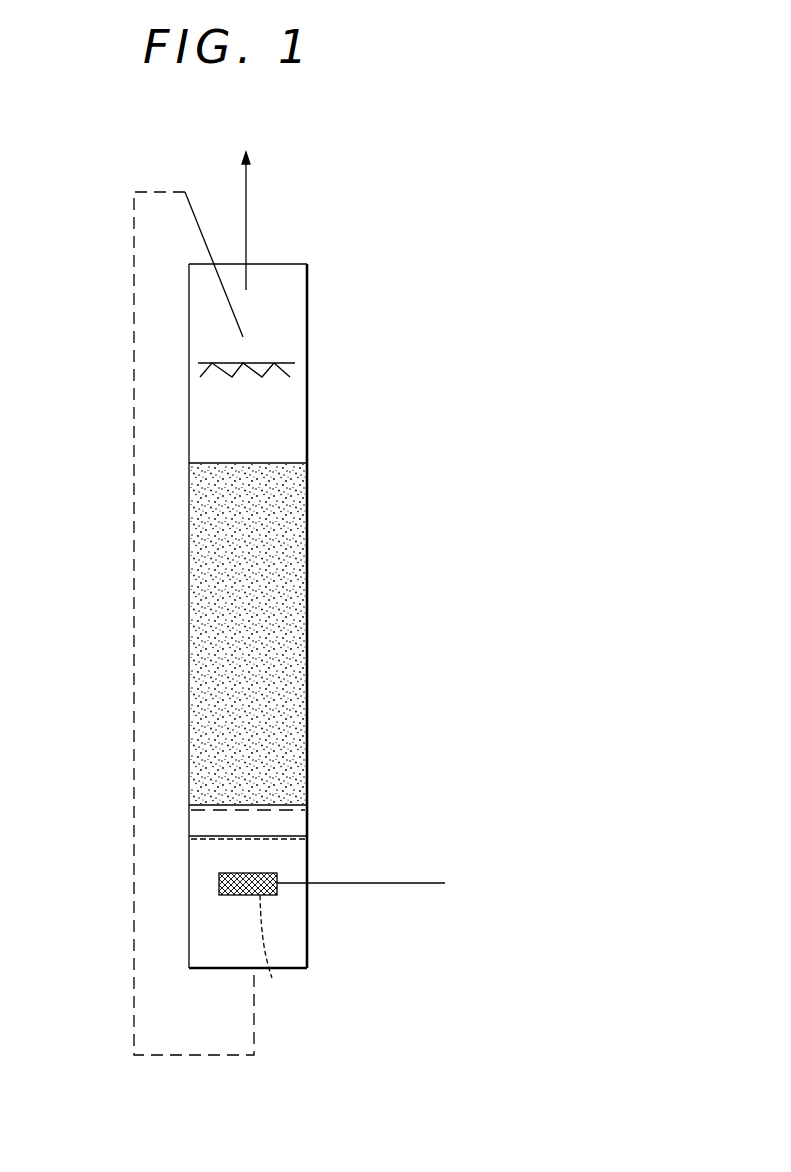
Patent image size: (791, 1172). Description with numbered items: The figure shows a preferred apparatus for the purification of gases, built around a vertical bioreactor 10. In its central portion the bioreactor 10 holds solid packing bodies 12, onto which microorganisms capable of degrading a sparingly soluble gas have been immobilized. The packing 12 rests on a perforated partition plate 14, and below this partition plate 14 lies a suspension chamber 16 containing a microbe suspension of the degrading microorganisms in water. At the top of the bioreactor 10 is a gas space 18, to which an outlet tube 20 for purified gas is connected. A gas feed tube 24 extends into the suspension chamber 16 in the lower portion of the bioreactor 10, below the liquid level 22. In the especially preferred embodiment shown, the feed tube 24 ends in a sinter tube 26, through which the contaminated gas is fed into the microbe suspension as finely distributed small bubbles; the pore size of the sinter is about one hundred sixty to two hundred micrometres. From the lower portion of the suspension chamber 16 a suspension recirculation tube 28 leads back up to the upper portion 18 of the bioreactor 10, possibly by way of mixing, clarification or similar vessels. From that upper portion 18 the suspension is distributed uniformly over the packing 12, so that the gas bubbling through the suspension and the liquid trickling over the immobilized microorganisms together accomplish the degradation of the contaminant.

The bioreactor 10 is at (288, 450).
The solid packing bodies 12 is at (308, 602).
The perforated partition plate 14 is at (288, 811).
The suspension chamber 16 is at (292, 945).
The gas space 18 is at (288, 317).
The outlet tube 20 is at (248, 222).
The liquid level 22 is at (285, 840).
The gas feed tube 24 is at (365, 885).
The sinter tube 26 is at (272, 978).
The suspension recirculation tube 28 is at (190, 1057).